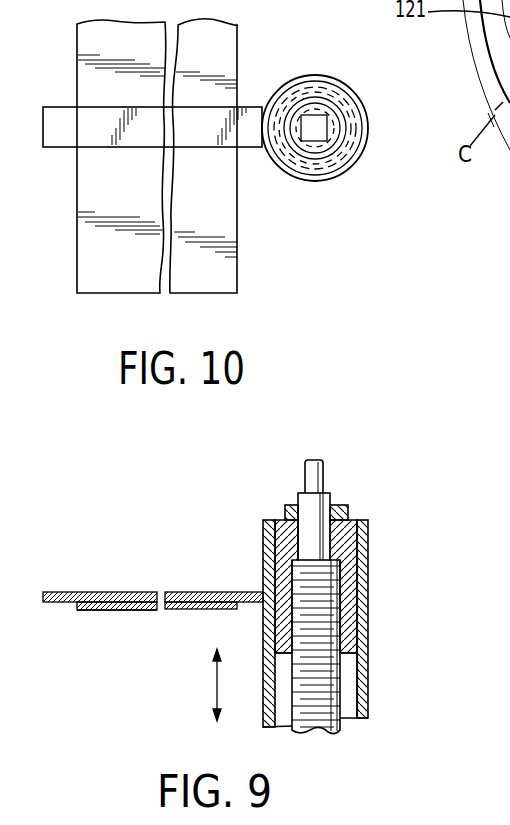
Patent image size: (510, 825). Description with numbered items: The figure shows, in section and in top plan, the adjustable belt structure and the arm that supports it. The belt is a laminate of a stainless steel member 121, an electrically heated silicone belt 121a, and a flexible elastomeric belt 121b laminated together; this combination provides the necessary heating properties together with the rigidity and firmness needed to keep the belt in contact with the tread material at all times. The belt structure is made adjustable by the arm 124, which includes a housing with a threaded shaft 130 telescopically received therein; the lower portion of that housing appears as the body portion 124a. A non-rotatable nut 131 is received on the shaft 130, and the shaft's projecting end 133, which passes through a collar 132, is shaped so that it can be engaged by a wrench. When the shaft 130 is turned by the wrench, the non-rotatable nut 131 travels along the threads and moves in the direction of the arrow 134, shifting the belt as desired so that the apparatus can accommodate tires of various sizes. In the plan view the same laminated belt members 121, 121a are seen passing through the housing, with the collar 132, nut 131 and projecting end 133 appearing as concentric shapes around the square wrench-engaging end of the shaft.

In FIG. 10, the stainless steel member 121 is at (67, 135).
In FIG. 9, the stainless steel member 121 is at (199, 610).
In FIG. 10, the electrically heated silicone belt 121a is at (233, 263).
In FIG. 9, the electrically heated silicone belt 121a is at (128, 606).
In FIG. 9, the flexible elastomeric belt 121b is at (102, 610).
In FIG. 9, the arm 124 is at (380, 631).
In FIG. 9, the clamp body lower portion 124a is at (365, 705).
In FIG. 9, the threaded shaft 130 is at (337, 677).
In FIG. 10, the non-rotatable nut 131 is at (302, 88).
In FIG. 9, the non-rotatable nut 131 is at (350, 612).
In FIG. 10, the collar 132 is at (318, 120).
In FIG. 9, the collar 132 is at (347, 508).
In FIG. 10, the projecting end 133 is at (314, 140).
In FIG. 9, the projecting end 133 is at (320, 473).
In FIG. 9, the arrow 134 is at (213, 687).